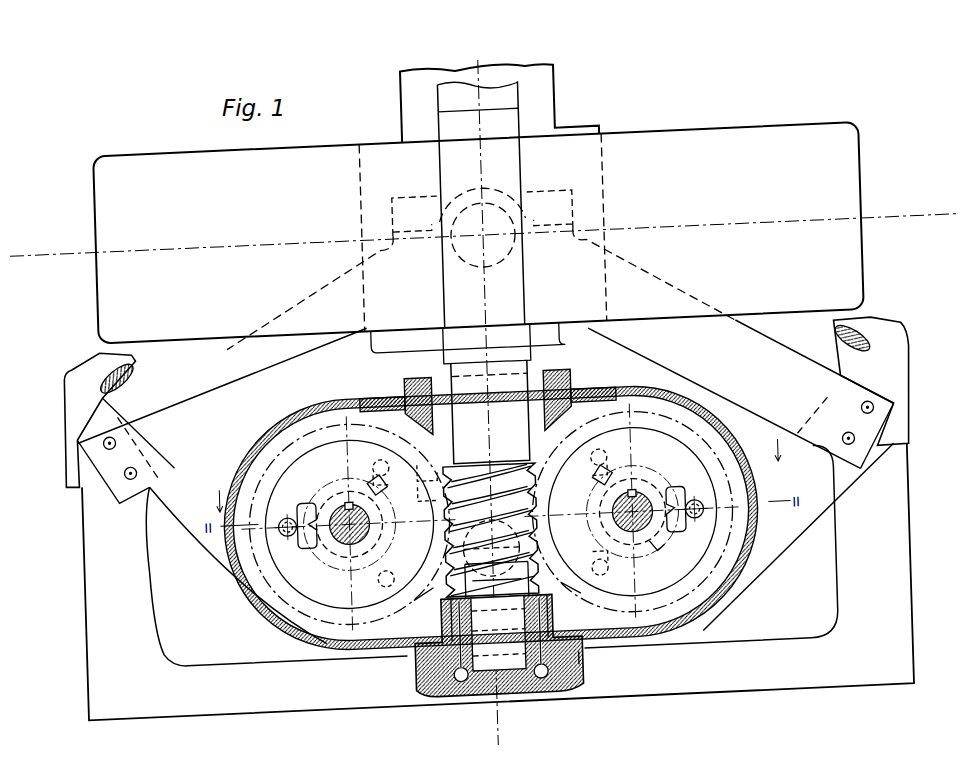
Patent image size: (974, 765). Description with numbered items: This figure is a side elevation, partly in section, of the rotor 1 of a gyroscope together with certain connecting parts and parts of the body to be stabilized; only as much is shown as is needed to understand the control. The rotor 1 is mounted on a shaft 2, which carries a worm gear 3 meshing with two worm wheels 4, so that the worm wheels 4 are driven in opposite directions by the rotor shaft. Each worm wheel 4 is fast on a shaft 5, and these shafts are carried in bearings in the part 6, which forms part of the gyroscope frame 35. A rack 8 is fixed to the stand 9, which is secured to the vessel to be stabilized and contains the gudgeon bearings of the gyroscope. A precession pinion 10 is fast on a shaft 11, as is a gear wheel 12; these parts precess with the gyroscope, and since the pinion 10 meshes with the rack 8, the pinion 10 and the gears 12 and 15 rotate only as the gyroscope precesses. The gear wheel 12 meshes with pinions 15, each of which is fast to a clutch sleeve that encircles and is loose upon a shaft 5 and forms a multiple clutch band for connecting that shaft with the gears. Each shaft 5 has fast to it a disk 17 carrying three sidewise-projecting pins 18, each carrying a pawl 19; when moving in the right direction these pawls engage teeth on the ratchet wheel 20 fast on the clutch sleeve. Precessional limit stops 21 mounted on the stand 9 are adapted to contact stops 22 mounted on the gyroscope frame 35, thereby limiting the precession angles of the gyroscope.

The rotor 1 is at (775, 156).
The shaft 2 is at (510, 351).
The worm gear 3 is at (511, 490).
The worm wheel 4 is at (712, 469).
The shaft 5 is at (325, 556).
The bearing part 6 is at (711, 438).
The rack 8 is at (773, 547).
The stand 9 is at (871, 592).
The precession pinion 10 is at (533, 547).
The shaft 11 is at (502, 582).
The gear wheel 12 is at (420, 470).
The pinion 15 is at (412, 498).
The disk 17 is at (586, 659).
The pin 18 is at (279, 527).
The pawl 19 is at (293, 492).
The ratchet wheel 20 is at (655, 560).
The precessional limit stop 21 is at (95, 388).
The stop 22 is at (423, 592).
The gyroscope frame 35 is at (548, 120).